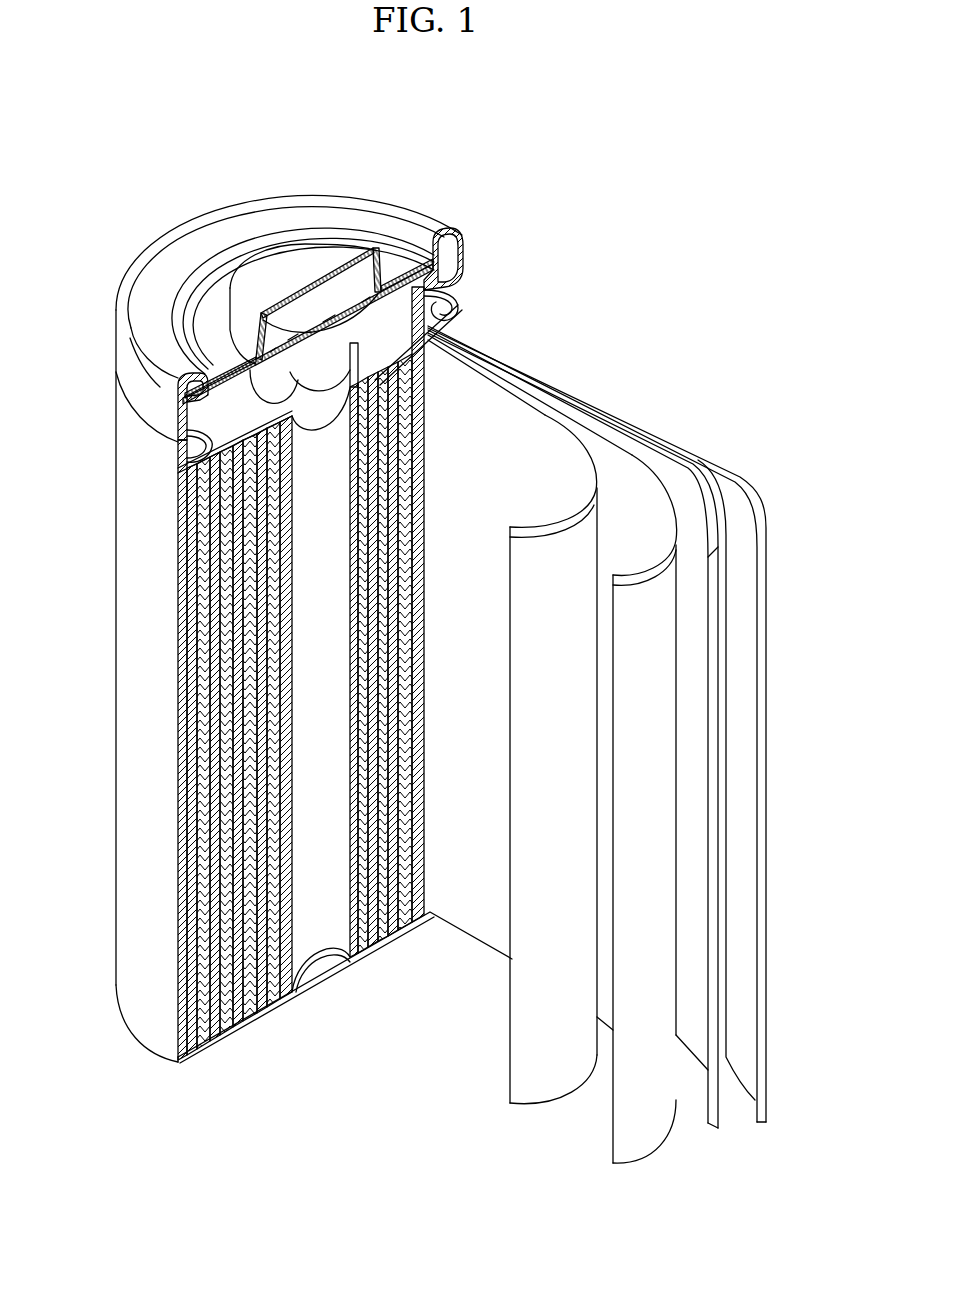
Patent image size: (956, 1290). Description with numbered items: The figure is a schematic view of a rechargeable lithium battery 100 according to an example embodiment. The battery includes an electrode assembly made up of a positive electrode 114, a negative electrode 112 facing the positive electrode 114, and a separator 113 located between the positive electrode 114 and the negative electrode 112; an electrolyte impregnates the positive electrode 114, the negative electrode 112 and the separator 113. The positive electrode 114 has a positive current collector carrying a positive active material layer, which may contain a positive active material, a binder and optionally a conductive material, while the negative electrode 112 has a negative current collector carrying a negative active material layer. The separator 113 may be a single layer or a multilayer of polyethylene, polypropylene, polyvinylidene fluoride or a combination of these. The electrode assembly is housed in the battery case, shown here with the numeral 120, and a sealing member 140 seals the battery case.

The rechargeable lithium battery 100 is at (528, 181).
The negative electrode 112 is at (762, 530).
The separator 113 is at (545, 413).
The positive electrode 114 is at (635, 470).
The case 120 is at (135, 636).
The sealing member 140 is at (278, 256).